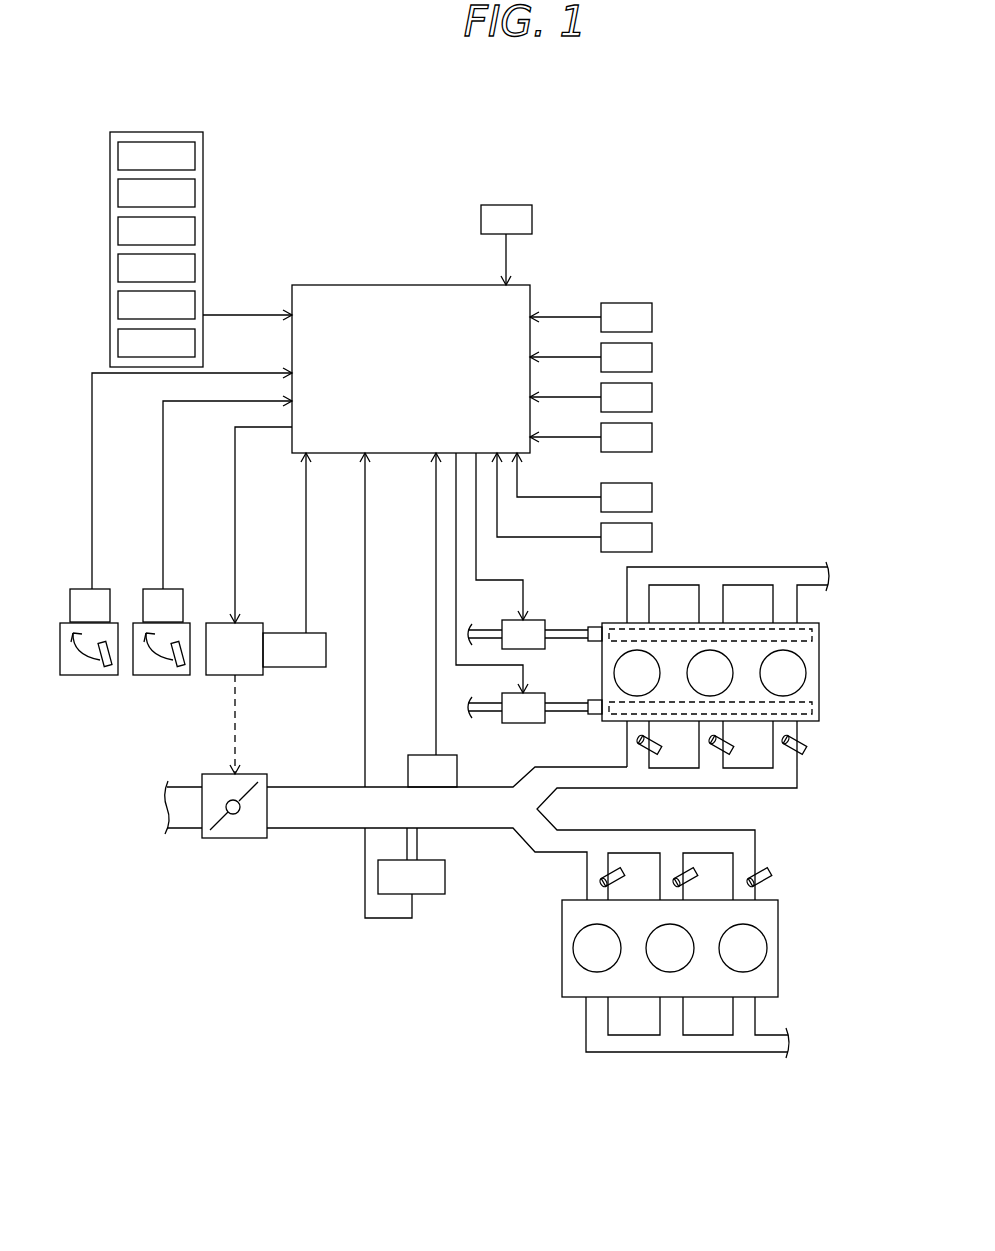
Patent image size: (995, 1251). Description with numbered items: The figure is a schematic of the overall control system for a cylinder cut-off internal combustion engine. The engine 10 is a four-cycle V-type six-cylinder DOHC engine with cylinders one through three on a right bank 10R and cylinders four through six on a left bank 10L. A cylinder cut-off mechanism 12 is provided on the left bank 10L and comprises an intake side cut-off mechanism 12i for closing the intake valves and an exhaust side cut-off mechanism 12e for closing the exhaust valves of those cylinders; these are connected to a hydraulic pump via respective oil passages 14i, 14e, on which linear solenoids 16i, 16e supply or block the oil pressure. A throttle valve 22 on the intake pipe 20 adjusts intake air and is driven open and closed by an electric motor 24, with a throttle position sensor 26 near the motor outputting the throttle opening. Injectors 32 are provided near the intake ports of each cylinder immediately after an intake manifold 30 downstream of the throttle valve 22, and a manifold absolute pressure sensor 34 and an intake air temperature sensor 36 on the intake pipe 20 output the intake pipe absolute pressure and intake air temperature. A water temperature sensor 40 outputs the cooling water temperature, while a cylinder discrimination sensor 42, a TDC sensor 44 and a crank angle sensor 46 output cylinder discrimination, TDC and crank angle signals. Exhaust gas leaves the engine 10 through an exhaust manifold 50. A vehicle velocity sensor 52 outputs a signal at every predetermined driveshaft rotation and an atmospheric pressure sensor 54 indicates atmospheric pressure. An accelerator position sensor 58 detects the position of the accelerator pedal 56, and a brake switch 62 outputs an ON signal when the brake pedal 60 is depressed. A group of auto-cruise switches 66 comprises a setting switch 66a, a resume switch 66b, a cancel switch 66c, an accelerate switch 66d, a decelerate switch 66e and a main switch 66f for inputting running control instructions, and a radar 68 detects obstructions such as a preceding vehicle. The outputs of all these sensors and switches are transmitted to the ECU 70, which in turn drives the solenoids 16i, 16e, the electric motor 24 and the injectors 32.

The engine 10 is at (713, 797).
The left bank 10L is at (709, 659).
The right bank 10R is at (778, 967).
The cylinder cut-off mechanism 12 is at (597, 703).
The exhaust side cut-off mechanism 12e is at (820, 637).
The intake side cut-off mechanism 12i is at (820, 708).
The oil passage 14e is at (562, 630).
The oil passage 14i is at (562, 711).
The linear solenoid 16e is at (510, 551).
The linear solenoid 16i is at (500, 588).
The intake pipe 20 is at (310, 828).
The throttle valve 22 is at (242, 838).
The electric motor 24 is at (249, 600).
The throttle position sensor 26 is at (295, 667).
The intake manifold 30 is at (657, 788).
The injectors 32 is at (806, 743).
The manifold absolute pressure sensor 34 is at (433, 894).
The intake air temperature sensor 36 is at (413, 755).
The water temperature sensor 40 is at (652, 317).
The cylinder discrimination sensor 42 is at (652, 357).
The TDC sensor 44 is at (652, 397).
The crank angle sensor 46 is at (652, 437).
The exhaust manifold 50 is at (742, 567).
The vehicle velocity sensor 52 is at (652, 497).
The atmospheric pressure sensor 54 is at (652, 537).
The accelerator pedal 56 is at (163, 675).
The accelerator position sensor 58 is at (174, 589).
The brake pedal 60 is at (90, 675).
The brake switch 62 is at (100, 589).
The group of auto-cruise switches 66 is at (201, 249).
The setting switch 66a is at (156, 156).
The resume switch 66b is at (156, 193).
The cancel switch 66c is at (156, 231).
The accelerate switch 66d is at (156, 268).
The decelerate switch 66e is at (156, 305).
The main switch 66f is at (156, 343).
The radar 68 is at (532, 220).
The ECU 70 is at (372, 285).